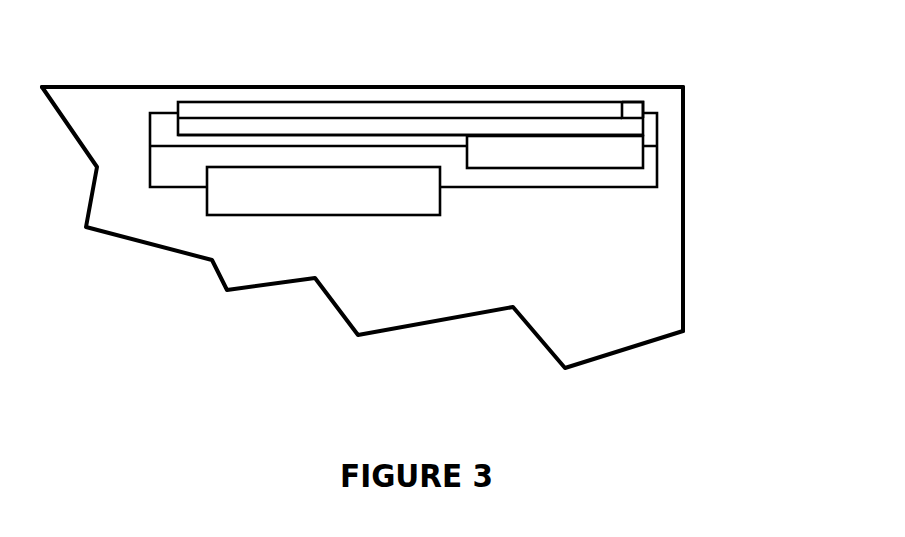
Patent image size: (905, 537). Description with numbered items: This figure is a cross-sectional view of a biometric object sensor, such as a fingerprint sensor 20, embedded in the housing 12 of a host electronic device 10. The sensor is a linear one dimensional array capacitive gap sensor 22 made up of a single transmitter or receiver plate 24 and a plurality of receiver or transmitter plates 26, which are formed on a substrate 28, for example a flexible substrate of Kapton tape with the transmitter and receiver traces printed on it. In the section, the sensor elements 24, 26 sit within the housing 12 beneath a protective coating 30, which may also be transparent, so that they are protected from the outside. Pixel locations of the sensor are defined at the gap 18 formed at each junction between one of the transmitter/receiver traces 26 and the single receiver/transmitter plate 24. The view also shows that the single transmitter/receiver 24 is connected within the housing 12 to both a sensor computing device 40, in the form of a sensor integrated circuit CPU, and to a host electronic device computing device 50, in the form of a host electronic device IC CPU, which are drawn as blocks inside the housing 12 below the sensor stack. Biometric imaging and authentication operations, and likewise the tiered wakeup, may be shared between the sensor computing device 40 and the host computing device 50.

The host electronic device 10 is at (698, 330).
The housing 12 is at (685, 268).
The gap 18 is at (626, 107).
The fingerprint sensor 20 is at (606, 64).
The linear one dimensional array capacitive gap sensor 22 is at (162, 82).
The transmitter or receiver plate 24 is at (650, 108).
The receiver or transmitter plates 26 is at (458, 113).
The substrate 28 is at (227, 128).
The protective coating 30 is at (317, 100).
The sensor computing device 40 is at (537, 158).
The host electronic device computing device 50 is at (335, 195).